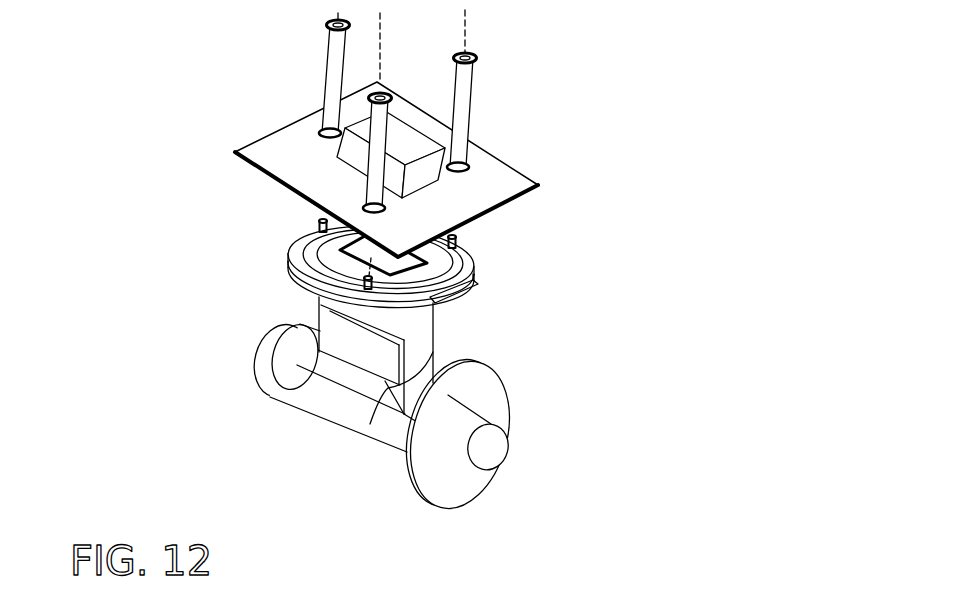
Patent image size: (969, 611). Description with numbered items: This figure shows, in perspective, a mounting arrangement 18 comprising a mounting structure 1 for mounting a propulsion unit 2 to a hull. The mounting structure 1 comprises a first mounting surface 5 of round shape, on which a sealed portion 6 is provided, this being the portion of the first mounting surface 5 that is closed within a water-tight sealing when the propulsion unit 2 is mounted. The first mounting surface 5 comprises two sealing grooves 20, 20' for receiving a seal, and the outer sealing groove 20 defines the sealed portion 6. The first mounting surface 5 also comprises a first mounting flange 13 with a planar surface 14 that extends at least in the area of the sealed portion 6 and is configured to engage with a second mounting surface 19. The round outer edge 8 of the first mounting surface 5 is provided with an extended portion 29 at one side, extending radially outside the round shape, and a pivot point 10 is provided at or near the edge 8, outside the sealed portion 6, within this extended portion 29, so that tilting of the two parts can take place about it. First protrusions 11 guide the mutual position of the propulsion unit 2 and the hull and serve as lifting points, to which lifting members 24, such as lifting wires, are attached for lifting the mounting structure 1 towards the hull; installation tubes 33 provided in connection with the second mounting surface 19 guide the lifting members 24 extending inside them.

The mounting structure 1 is at (361, 338).
The propulsion unit 2 is at (322, 407).
The first mounting surface 5 is at (327, 250).
The sealed portion 6 is at (455, 280).
The edge 8 is at (297, 284).
The pivot point 10 is at (452, 265).
The first protrusions 11 is at (320, 228).
The first mounting flange 13 is at (285, 259).
The planar surface 14 is at (384, 257).
The mounting arrangement 18 is at (314, 128).
The second mounting surface 19 is at (262, 181).
The outer sealing groove 20 is at (299, 359).
The sealing groove 20' is at (315, 360).
The lifting members 24 is at (415, 106).
The extended portion 29 is at (484, 295).
The installation tubes 33 is at (457, 152).